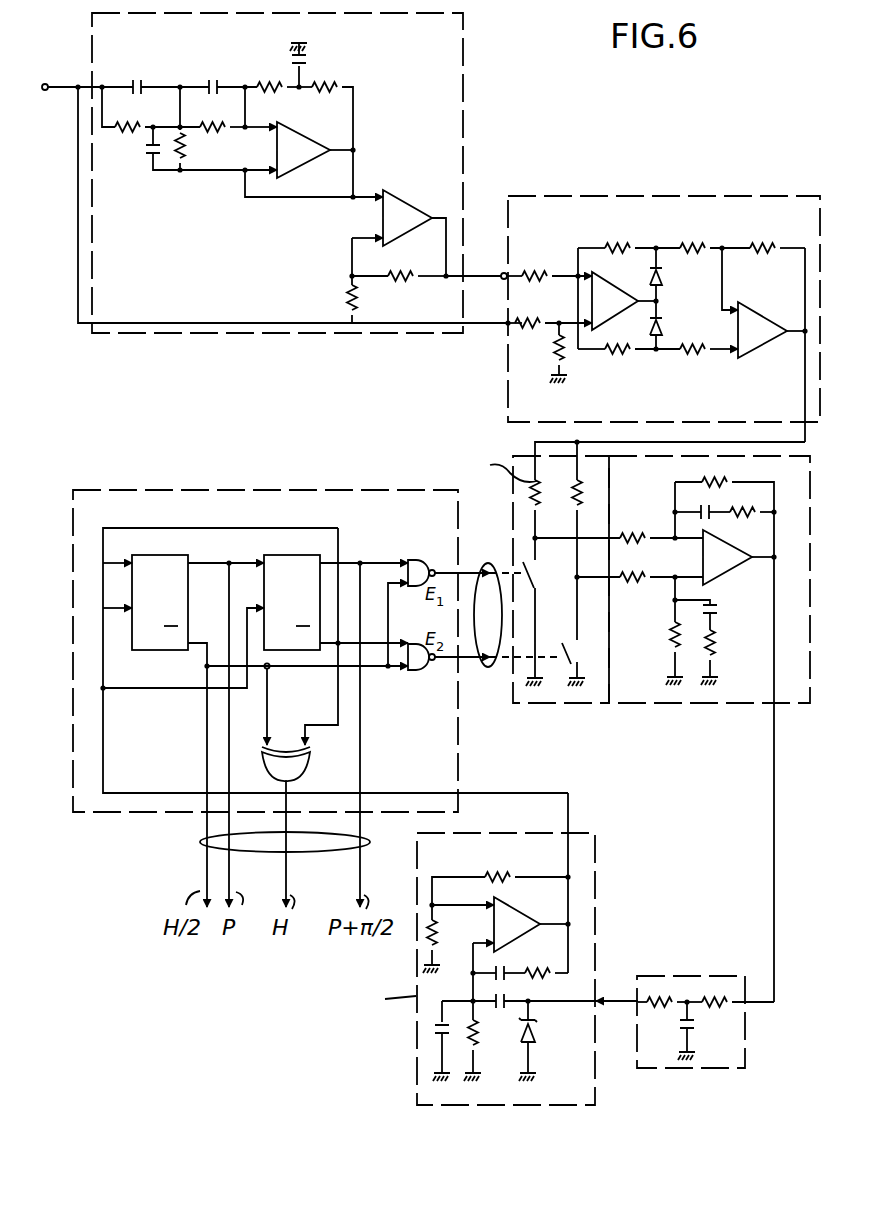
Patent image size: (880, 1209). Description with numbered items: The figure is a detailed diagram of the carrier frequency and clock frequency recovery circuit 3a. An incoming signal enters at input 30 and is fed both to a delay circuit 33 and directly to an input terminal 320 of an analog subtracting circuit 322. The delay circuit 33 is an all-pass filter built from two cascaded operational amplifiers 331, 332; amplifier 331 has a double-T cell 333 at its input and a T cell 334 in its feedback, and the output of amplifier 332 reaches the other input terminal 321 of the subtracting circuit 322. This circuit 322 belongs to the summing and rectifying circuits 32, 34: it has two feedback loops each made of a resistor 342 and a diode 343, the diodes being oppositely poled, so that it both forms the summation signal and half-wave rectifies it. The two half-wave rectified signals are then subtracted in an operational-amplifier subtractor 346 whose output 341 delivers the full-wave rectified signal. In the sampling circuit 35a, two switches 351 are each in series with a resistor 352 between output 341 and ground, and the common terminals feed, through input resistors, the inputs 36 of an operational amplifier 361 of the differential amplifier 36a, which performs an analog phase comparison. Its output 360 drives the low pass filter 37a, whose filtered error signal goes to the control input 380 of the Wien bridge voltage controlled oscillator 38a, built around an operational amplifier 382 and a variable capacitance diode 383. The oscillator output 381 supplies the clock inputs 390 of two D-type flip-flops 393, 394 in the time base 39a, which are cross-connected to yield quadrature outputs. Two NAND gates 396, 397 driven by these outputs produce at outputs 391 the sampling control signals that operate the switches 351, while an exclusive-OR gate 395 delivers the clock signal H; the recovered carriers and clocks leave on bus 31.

The input 30 is at (44, 86).
The delay circuit 33 is at (455, 90).
The operational amplifier 331 is at (302, 148).
The operational amplifier 332 is at (416, 190).
The double-T cell 333 is at (123, 108).
The T cell 334 is at (308, 78).
The input terminal 320 is at (505, 333).
The input terminal 321 is at (502, 272).
The summing circuit 32 is at (583, 201).
The rectifier 34 is at (664, 292).
The subtracting circuit 322 is at (620, 276).
The resistor 342 is at (619, 244).
The diode 343 is at (664, 278).
The subtractor 346 is at (762, 320).
The output 341 is at (804, 396).
The recovery circuit 3a is at (232, 380).
The time base 39a is at (254, 495).
The first flip-flop 393 is at (155, 555).
The second flip-flop 394 is at (292, 555).
The clock input 390 is at (126, 606).
The OR-Exclusive gate 395 is at (300, 768).
The NAND gate 396 is at (418, 558).
The NAND gate 397 is at (422, 667).
The outputs 391 is at (488, 562).
The bus 31 is at (200, 842).
The sampling circuit 35a is at (578, 698).
The resistor 352 is at (584, 493).
The switch 351 is at (530, 576).
The inputs 36 is at (665, 608).
The differential amplifier 36a is at (672, 690).
The operational amplifier 361 is at (730, 560).
The output 360 is at (773, 868).
The voltage controlled oscillator 38a is at (598, 845).
The output 381 is at (492, 798).
The operational amplifier 382 is at (531, 901).
The variable capacitance diode 383 is at (537, 1030).
The control input 380 is at (600, 998).
The low pass filter 37a is at (680, 948).